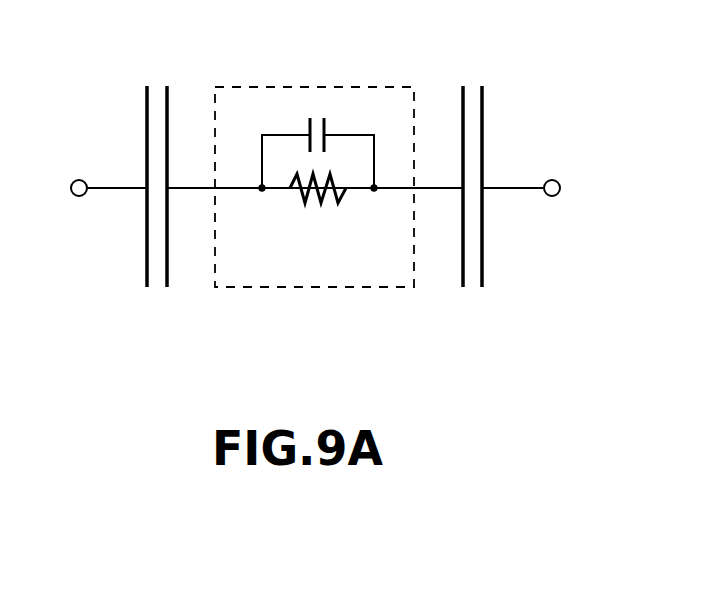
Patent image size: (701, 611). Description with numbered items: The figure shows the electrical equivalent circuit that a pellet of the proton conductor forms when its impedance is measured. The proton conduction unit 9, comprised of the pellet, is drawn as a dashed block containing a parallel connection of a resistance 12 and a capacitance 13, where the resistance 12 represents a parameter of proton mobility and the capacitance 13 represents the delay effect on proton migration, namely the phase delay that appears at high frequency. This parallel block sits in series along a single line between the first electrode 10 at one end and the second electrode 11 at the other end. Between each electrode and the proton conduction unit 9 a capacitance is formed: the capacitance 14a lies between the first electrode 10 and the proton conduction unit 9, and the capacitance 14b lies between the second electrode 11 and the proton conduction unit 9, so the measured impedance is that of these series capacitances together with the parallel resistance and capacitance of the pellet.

The proton conduction unit 9 is at (394, 82).
The first electrode 10 is at (553, 178).
The second electrode 11 is at (78, 178).
The resistance 12 is at (341, 197).
The capacitance 13 is at (308, 122).
The capacitance 14a is at (470, 208).
The capacitance 14b is at (156, 208).